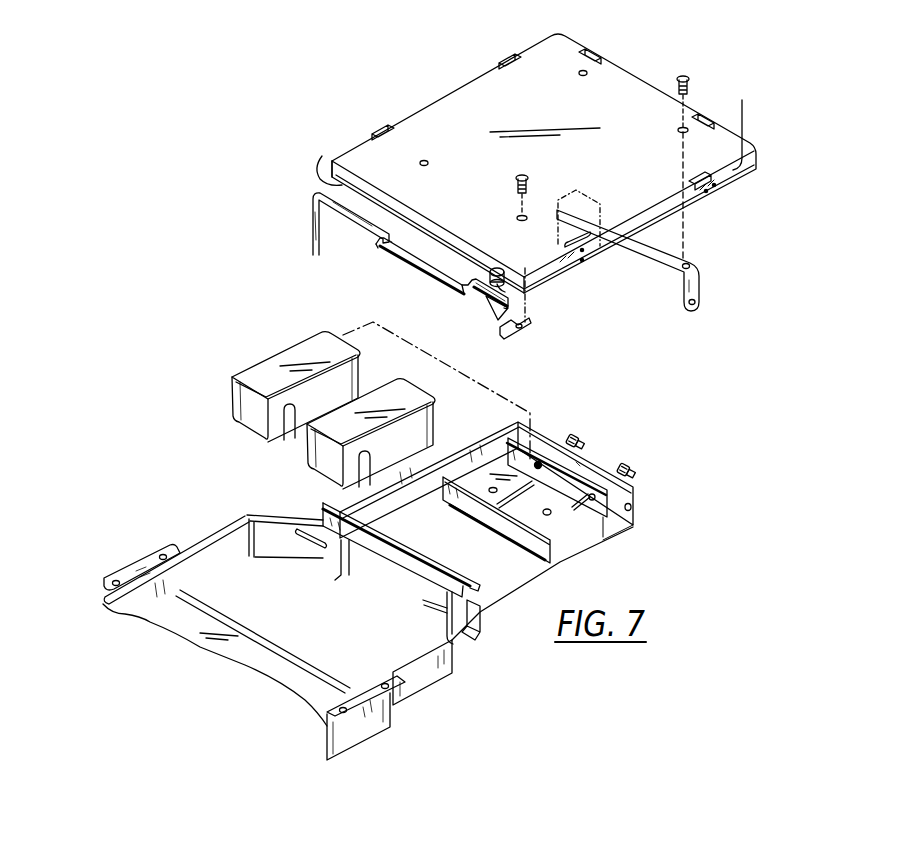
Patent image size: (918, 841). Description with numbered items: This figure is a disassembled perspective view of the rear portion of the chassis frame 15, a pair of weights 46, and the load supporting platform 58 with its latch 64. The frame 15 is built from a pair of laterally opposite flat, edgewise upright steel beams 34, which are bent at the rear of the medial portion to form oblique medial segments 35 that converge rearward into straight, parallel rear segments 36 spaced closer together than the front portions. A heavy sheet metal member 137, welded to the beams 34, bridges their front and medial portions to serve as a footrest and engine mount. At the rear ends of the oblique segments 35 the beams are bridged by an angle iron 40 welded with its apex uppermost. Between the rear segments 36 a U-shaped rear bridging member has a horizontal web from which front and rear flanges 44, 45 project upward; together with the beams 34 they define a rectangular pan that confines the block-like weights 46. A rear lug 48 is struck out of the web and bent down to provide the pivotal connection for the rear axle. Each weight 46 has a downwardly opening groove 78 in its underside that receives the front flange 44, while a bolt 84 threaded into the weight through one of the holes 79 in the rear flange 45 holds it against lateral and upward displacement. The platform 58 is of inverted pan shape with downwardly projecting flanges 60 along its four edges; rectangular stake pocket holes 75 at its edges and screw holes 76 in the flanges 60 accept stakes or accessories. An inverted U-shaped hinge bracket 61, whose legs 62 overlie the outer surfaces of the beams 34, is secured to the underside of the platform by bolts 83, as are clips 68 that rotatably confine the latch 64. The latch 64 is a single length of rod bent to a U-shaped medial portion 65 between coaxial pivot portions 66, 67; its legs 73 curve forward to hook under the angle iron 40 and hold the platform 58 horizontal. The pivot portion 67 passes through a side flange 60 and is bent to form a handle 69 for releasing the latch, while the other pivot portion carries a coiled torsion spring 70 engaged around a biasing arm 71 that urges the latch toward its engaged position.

The frame 15 is at (409, 578).
The beams 34 is at (210, 528).
The oblique medial segments 35 is at (292, 550).
The rear segments 36 is at (480, 445).
The angle iron 40 is at (410, 566).
The front flange 44 is at (470, 503).
The rear flange 45 is at (576, 464).
The weights 46 is at (300, 365).
The rear lug 48 is at (505, 518).
The load supporting platform 58 is at (530, 128).
The flanges 60 is at (330, 163).
The hinge bracket 61 is at (690, 264).
The legs 62 is at (702, 286).
The latch 64 is at (300, 203).
The U-shaped medial portion 65 is at (398, 262).
The pivot portion 66 is at (476, 290).
The pivot portion 67 is at (368, 233).
The clips 68 is at (535, 331).
The handle 69 is at (312, 222).
The torsion spring 70 is at (490, 270).
The biasing arm 71 is at (494, 312).
The legs 73 is at (391, 240).
The rectangular holes 75 is at (510, 58).
The screw holes 76 is at (718, 186).
The groove 78 is at (286, 442).
The holes 79 is at (540, 462).
The bolts 83 is at (688, 78).
The bolt 84 is at (582, 438).
The sheet metal member 137 is at (290, 663).